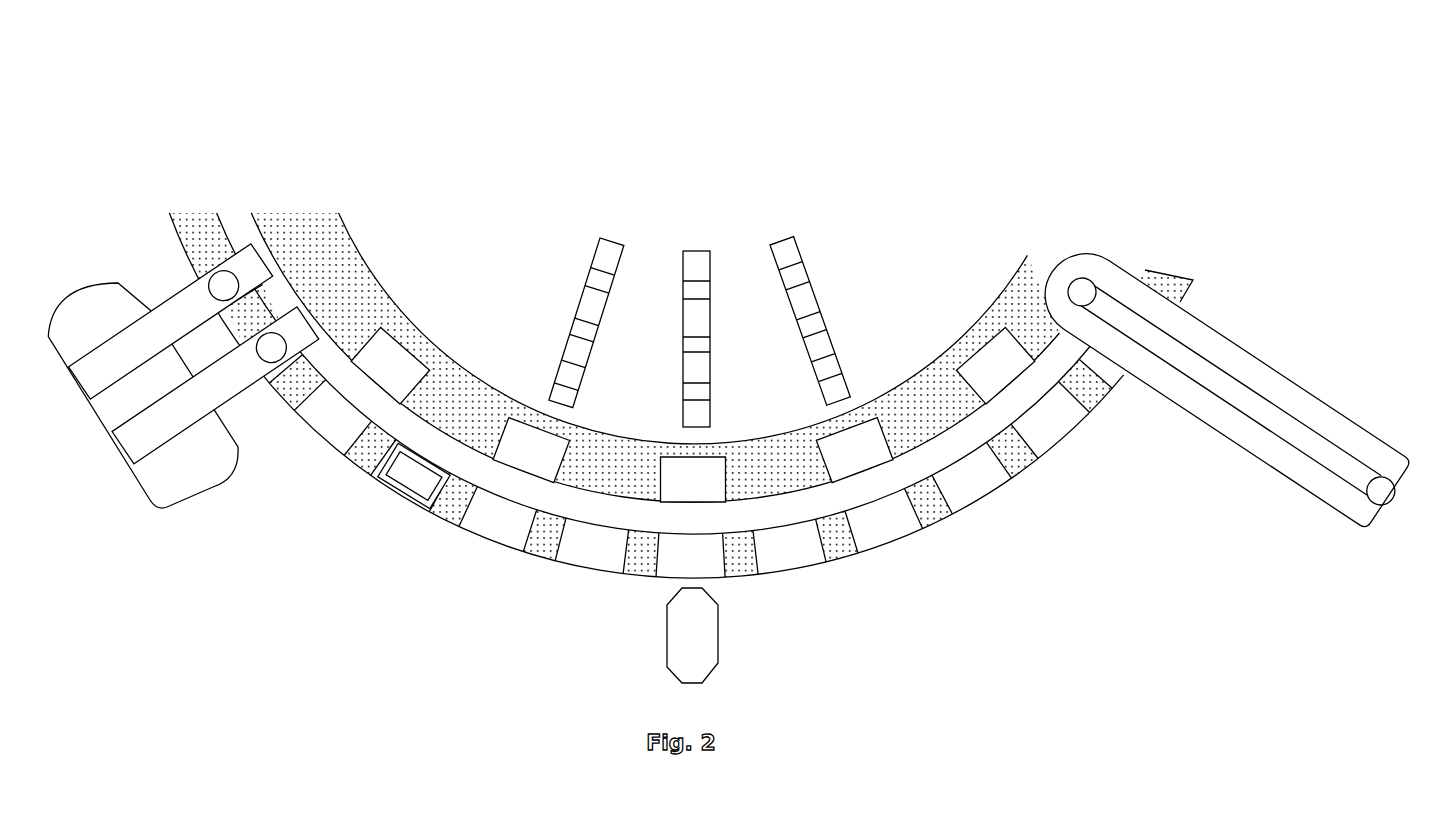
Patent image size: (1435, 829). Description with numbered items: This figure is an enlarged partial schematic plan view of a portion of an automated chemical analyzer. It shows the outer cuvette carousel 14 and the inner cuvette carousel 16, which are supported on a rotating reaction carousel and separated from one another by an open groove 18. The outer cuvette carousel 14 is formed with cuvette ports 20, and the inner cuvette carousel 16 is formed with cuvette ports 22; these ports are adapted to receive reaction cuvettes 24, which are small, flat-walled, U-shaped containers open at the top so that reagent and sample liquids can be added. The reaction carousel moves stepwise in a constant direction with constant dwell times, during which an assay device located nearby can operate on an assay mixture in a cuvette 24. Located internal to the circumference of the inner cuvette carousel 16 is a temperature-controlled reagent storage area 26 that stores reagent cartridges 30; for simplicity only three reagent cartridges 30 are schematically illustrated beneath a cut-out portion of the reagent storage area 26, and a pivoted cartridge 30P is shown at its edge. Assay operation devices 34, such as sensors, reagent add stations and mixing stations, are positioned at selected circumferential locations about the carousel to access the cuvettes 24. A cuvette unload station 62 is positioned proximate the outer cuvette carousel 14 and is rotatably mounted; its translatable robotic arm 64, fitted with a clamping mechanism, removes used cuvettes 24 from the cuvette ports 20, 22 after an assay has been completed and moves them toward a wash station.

The outer cuvette carousel 14 is at (1005, 292).
The inner cuvette carousel 16 is at (487, 397).
The open groove 18 is at (596, 500).
The cuvette ports 20 is at (893, 543).
The cuvette ports 22 is at (677, 480).
The reaction cuvettes 24 is at (405, 494).
The reagent storage area 26 is at (708, 41).
The reagent cartridges 30 is at (593, 262).
The pivoted fin 30P is at (1084, 288).
The assay operation devices 34 is at (718, 613).
The cuvette unload station 62 is at (133, 470).
The translatable robotic arm 64 is at (265, 355).